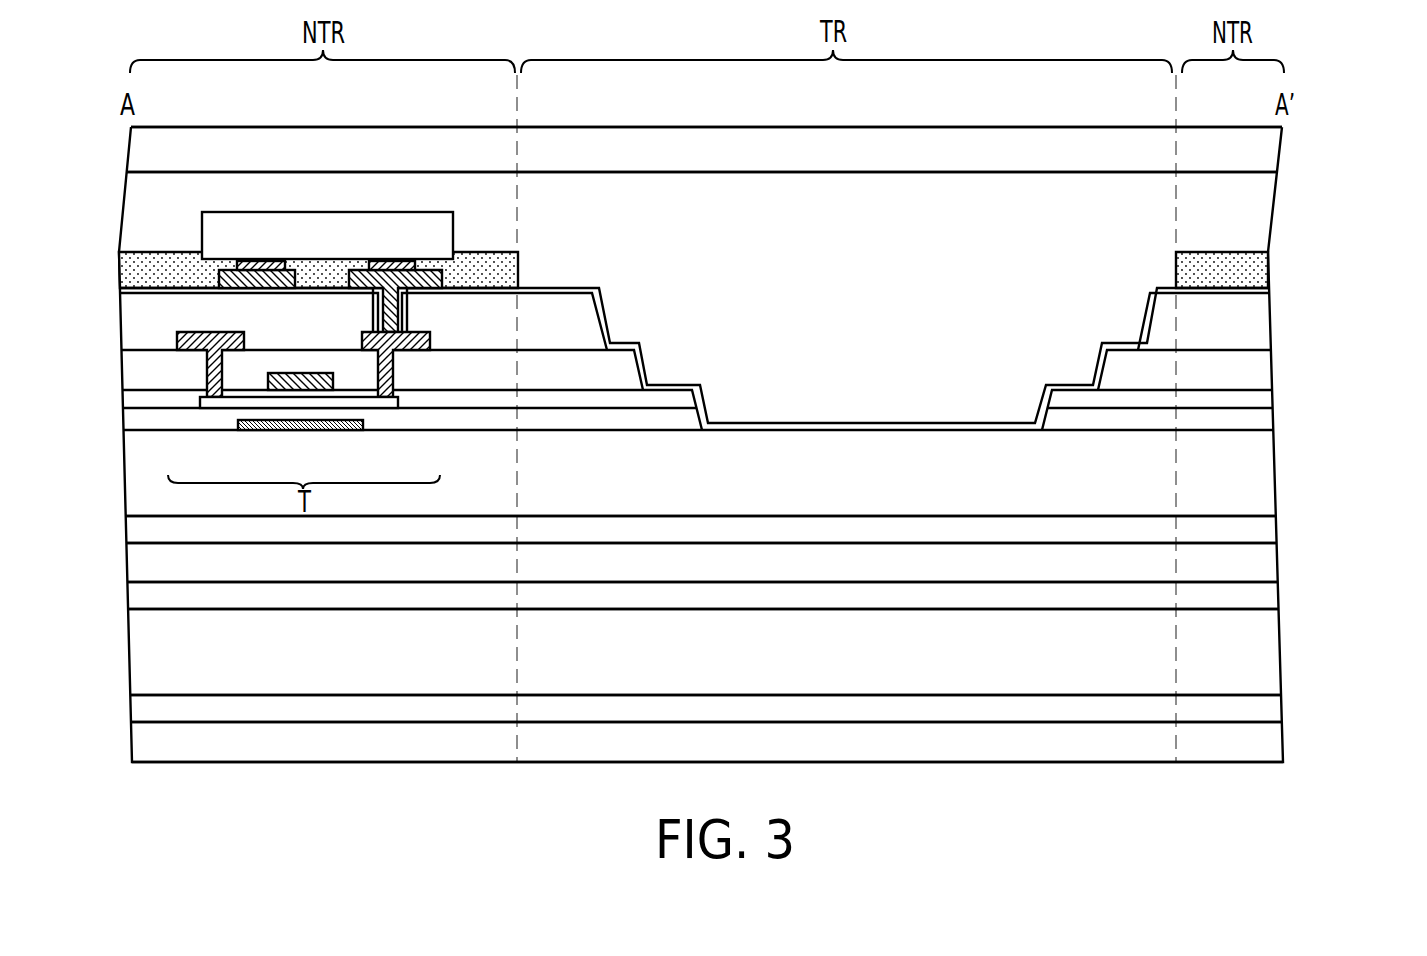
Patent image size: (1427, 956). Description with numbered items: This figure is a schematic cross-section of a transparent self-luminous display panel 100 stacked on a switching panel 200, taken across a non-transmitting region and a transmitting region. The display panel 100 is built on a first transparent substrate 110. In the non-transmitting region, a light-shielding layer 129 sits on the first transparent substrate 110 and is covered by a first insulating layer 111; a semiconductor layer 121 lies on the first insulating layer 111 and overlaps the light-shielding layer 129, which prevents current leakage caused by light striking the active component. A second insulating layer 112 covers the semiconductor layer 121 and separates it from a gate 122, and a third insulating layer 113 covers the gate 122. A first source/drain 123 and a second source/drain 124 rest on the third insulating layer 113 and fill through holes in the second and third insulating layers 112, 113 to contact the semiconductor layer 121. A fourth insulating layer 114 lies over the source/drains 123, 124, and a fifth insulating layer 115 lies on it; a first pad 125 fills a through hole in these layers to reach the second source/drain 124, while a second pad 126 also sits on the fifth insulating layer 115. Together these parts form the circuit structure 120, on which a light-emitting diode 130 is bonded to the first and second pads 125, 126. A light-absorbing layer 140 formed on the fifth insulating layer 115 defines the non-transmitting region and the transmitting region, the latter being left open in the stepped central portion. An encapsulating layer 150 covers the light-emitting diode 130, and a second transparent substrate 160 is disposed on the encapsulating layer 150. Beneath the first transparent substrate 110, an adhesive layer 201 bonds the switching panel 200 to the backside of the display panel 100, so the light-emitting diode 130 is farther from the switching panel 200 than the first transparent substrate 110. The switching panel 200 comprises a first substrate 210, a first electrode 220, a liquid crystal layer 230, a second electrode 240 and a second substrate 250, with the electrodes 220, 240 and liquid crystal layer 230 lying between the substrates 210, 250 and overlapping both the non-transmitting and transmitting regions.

The transparent self-luminous display panel 100 is at (1362, 127).
The first transparent substrate 110 is at (1259, 474).
The first insulating layer 111 is at (1259, 432).
The second insulating layer 112 is at (1259, 402).
The third insulating layer 113 is at (1259, 369).
The fourth insulating layer 114 is at (1259, 327).
The fifth insulating layer 115 is at (1259, 292).
The circuit structure 120 is at (110, 275).
The semiconductor layer 121 is at (373, 405).
The gate 122 is at (317, 382).
The first source/drain 123 is at (192, 342).
The second source/drain 124 is at (413, 342).
The first pad 125 is at (428, 282).
The second pad 126 is at (227, 278).
The light-shielding layer 129 is at (269, 425).
The light-emitting diode 130 is at (217, 229).
The light-absorbing layer 140 is at (1259, 267).
The encapsulating layer 150 is at (1259, 217).
The second transparent substrate 160 is at (1259, 151).
The switching panel 200 is at (1362, 543).
The adhesive layer 201 is at (1259, 532).
The first substrate 210 is at (1259, 565).
The first electrode 220 is at (1259, 597).
The liquid crystal layer 230 is at (1259, 656).
The second electrode 240 is at (1259, 711).
The second substrate 250 is at (1259, 745).